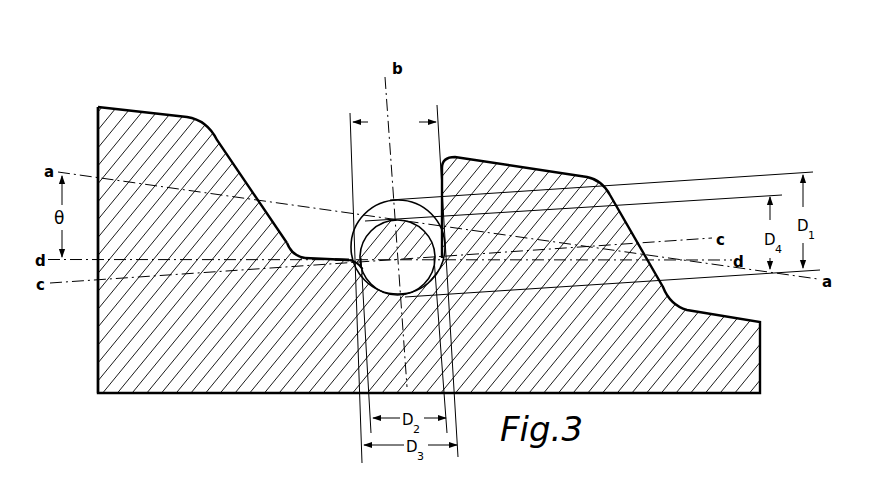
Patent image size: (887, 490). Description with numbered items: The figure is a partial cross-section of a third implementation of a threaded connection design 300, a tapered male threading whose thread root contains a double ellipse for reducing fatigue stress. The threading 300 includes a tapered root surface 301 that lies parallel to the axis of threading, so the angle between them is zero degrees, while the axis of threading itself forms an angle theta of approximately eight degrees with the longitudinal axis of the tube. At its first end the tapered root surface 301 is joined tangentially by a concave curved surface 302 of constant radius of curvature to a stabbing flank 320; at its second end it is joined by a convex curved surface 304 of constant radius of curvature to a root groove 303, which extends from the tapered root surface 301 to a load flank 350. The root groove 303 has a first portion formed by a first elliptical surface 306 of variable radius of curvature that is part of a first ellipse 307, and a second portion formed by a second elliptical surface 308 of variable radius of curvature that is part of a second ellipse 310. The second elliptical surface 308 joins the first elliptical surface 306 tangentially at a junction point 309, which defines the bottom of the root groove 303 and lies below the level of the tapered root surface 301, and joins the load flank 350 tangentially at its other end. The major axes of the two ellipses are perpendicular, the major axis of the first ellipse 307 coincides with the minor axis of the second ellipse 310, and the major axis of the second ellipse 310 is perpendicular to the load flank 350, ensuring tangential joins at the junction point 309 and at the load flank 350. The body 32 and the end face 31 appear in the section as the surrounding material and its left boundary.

The threaded connection design 300 is at (443, 243).
The stabbing flank 320 is at (238, 146).
The concave curved surface 302 is at (287, 238).
The tapered root surface 301 is at (312, 256).
The second ellipse 310 is at (351, 257).
The convex curved surface 304 is at (360, 268).
The load flank 350 is at (441, 187).
The first elliptical surface 306 is at (425, 246).
The first ellipse 307 is at (375, 200).
The second elliptical surface 308 is at (438, 285).
The junction point 309 is at (402, 298).
The root groove 303 is at (404, 284).
The body 32 is at (110, 329).
The end face 31 is at (96, 367).